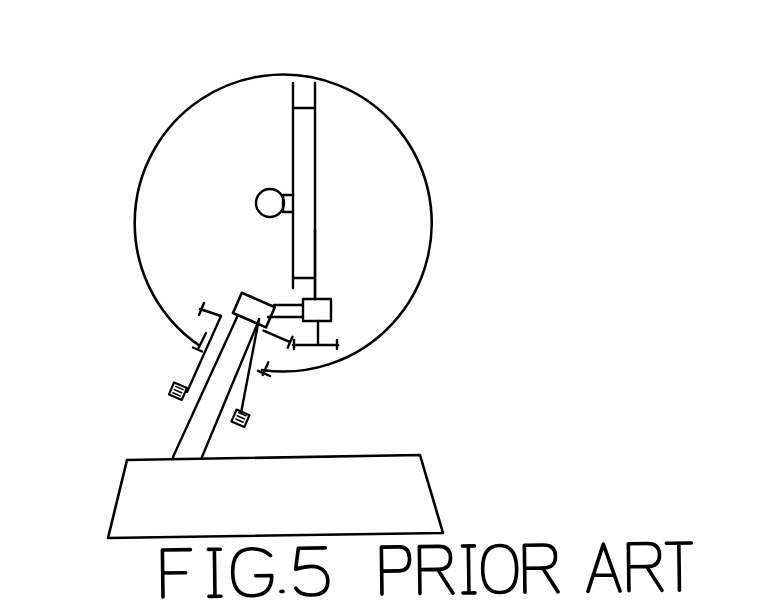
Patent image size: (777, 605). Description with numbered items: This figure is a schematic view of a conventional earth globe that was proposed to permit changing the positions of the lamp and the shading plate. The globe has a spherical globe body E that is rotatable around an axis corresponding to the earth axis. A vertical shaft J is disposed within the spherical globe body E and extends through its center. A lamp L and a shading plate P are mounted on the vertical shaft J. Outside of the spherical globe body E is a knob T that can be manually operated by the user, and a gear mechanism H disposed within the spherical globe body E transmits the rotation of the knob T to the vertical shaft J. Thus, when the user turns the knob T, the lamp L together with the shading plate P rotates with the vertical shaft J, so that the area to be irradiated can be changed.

The spherical globe body E is at (373, 101).
The shading plate P is at (293, 127).
The vertical shaft J is at (317, 225).
The lamp L is at (256, 203).
The gear mechanism H is at (280, 350).
The knob T is at (172, 391).